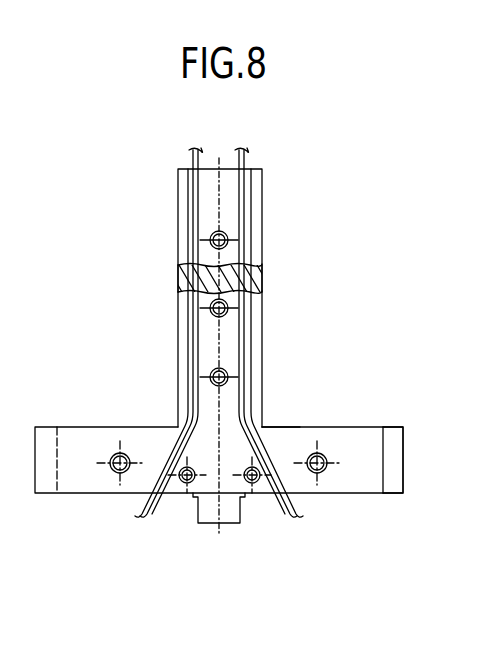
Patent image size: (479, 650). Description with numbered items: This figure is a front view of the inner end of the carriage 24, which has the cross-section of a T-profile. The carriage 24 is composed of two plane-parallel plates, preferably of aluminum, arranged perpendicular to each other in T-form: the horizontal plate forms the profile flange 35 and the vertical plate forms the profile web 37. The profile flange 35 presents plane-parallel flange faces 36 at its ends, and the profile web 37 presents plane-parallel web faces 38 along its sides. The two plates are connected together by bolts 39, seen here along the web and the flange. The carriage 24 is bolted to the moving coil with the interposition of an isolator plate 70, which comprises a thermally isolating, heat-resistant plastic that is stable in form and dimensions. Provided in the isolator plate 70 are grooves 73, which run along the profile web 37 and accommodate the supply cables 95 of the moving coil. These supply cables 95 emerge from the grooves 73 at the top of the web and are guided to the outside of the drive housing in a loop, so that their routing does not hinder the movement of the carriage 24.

The carriage 24 is at (263, 203).
The supply cables 95 is at (232, 149).
The grooves 73 is at (190, 200).
The profile web 37 is at (243, 287).
The web faces 38 is at (260, 272).
The profile flange 35 is at (392, 460).
The flange faces 36 is at (393, 427).
The isolator plate 70 is at (253, 402).
The bolts 39 is at (233, 514).